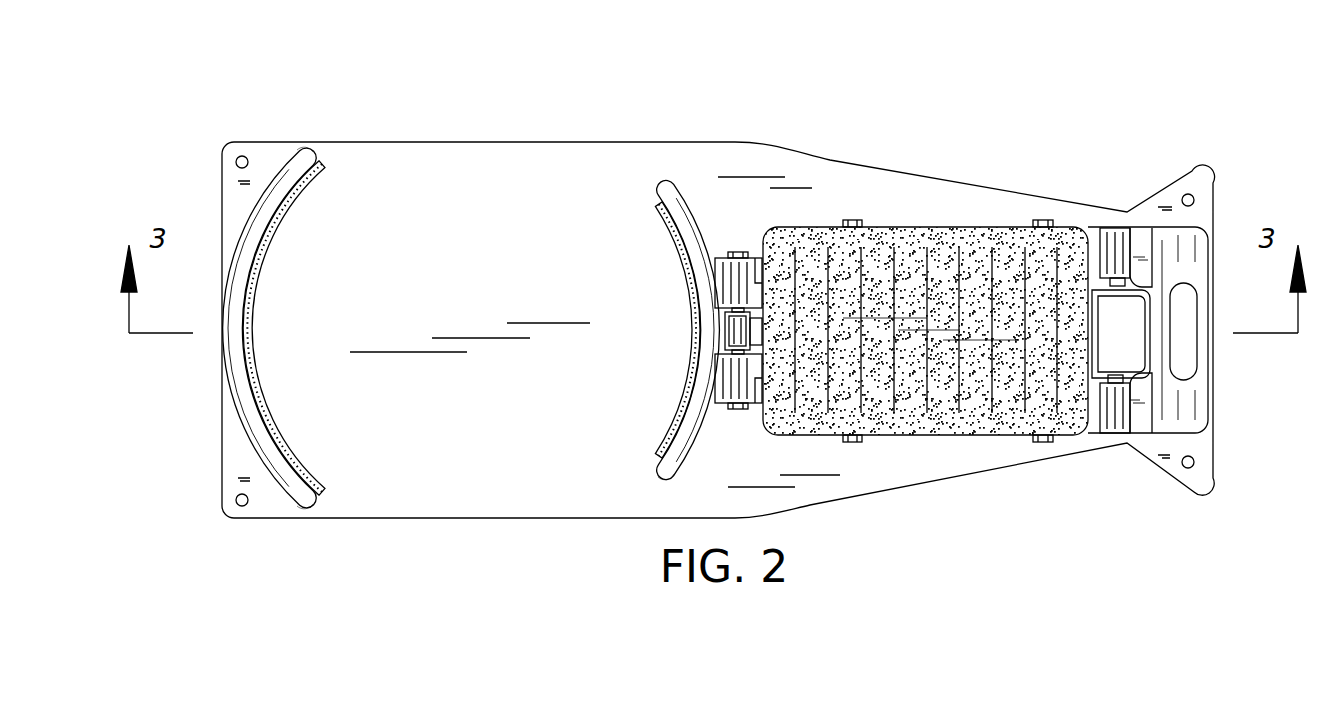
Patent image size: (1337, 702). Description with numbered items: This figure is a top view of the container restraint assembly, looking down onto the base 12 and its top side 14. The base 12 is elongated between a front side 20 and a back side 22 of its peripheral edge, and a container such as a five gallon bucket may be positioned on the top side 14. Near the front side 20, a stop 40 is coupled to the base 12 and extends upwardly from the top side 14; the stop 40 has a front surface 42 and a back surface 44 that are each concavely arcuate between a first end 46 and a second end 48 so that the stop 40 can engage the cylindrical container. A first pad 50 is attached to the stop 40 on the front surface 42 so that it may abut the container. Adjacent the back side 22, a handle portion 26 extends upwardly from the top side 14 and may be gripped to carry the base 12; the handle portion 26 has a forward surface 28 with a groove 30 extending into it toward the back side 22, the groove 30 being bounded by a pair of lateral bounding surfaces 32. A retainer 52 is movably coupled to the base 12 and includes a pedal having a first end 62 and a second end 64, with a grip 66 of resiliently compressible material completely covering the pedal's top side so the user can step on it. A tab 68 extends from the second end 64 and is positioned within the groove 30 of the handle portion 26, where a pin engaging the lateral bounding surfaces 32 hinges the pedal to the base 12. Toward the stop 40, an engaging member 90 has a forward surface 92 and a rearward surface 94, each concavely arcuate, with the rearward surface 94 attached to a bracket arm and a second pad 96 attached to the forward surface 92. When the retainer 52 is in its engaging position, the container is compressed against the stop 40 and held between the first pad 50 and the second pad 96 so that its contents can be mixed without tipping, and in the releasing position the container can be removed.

The base 12 is at (225, 142).
The top side 14 is at (468, 170).
The front side 20 is at (222, 177).
The back side 22 is at (1215, 250).
The handle portion 26 is at (1130, 250).
The forward surface 28 is at (1100, 240).
The groove 30 is at (1138, 340).
The lateral bounding surfaces 32 is at (1160, 275).
The stop 40 is at (243, 439).
The front surface 42 is at (300, 190).
The back surface 44 is at (247, 233).
The first end 46 is at (310, 148).
The second end 48 is at (318, 512).
The first pad 50 is at (252, 362).
The retainer 52 is at (851, 185).
The first end 62 is at (748, 256).
The second end 64 is at (1163, 307).
The grip 66 is at (940, 265).
The tab 68 is at (1150, 352).
The engaging member 90 is at (663, 180).
The forward surface 92 is at (660, 215).
The rearward surface 94 is at (680, 193).
The second pad 96 is at (657, 450).